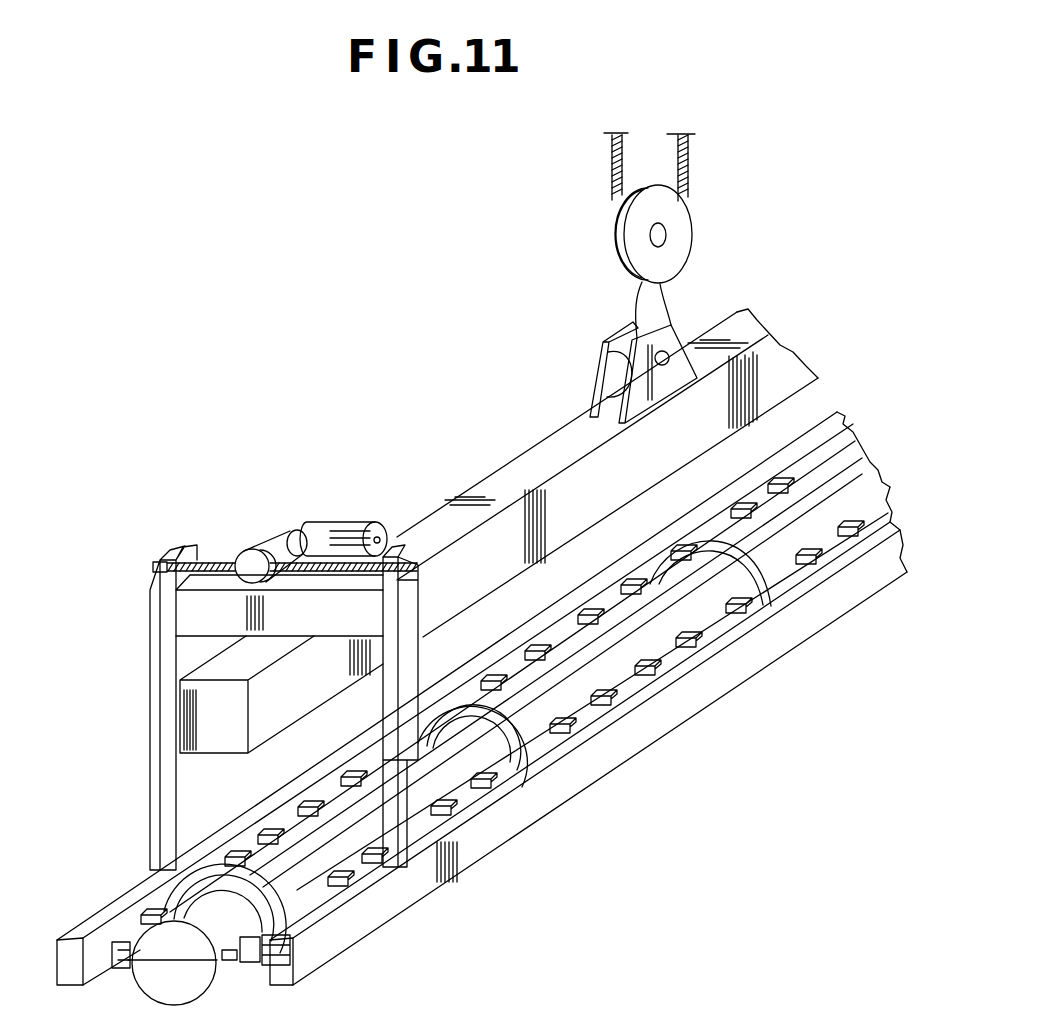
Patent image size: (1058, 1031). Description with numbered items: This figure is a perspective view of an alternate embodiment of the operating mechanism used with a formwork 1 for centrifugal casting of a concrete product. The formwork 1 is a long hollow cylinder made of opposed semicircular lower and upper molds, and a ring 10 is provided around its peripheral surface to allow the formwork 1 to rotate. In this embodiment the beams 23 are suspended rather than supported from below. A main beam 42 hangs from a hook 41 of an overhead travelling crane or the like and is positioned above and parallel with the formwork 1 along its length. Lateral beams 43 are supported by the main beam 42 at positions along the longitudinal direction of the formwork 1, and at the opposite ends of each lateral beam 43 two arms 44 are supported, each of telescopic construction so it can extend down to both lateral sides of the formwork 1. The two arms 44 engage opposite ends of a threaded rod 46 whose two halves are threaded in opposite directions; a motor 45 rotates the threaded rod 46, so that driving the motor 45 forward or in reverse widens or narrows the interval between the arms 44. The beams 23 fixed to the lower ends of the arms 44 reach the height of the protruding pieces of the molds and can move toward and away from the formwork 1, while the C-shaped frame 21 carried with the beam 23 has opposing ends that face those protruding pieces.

The formwork 1 is at (352, 843).
The ring 10 is at (523, 765).
The C-shaped frame 21 is at (660, 682).
The beam 23 is at (93, 922).
The hook 41 is at (648, 303).
The main beam 42 is at (517, 467).
The lateral beam 43 is at (222, 602).
The arm 44 is at (414, 662).
The motor 45 is at (343, 532).
The threaded rod 46 is at (207, 560).